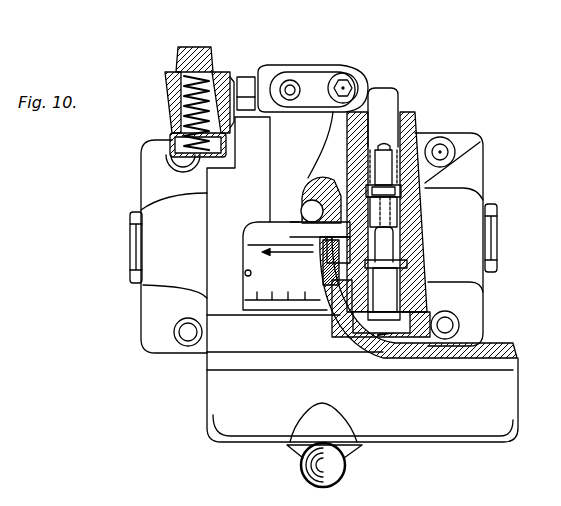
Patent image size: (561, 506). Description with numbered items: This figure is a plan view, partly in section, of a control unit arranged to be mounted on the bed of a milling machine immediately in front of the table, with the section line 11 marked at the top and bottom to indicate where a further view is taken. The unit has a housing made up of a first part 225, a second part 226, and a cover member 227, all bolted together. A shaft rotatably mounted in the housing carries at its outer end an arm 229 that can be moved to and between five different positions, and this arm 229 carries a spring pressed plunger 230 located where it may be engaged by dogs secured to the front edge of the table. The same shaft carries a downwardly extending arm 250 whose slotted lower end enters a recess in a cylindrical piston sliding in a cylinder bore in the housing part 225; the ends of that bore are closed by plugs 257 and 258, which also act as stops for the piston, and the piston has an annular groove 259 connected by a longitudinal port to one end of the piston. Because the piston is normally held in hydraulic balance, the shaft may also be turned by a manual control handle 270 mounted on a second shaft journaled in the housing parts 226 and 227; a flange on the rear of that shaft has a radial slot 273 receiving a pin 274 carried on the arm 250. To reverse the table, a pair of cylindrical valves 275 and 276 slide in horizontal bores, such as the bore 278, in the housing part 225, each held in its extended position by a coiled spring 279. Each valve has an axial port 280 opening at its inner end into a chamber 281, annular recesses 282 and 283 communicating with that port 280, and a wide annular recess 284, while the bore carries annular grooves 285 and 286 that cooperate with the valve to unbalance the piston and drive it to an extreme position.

The section line 11— 11 is at (307, 38).
The first housing part 225 is at (276, 172).
The second housing part 226 is at (258, 331).
The cover member 227 is at (503, 383).
The arm 229 is at (247, 84).
The spring pressed plunger 230 is at (185, 47).
The downwardly extending arm 250 is at (303, 236).
The plug 257 is at (131, 239).
The plug 258 is at (500, 234).
The annular groove 259 is at (367, 164).
The manual control handle 270 is at (345, 466).
The radial slot 273 is at (334, 326).
The pin 274 is at (317, 258).
The cylindrical valve 275 is at (249, 90).
The cylindrical valve 276 is at (394, 103).
The horizontal bore 278 is at (345, 114).
The coiled spring 279 is at (400, 324).
The axial port 280 is at (425, 133).
The chamber 281 is at (386, 360).
The annular recess 282 is at (386, 146).
The annular recess 283 is at (480, 145).
The wide annular recess 284 is at (408, 263).
The annular groove 285 is at (404, 204).
The annular groove 286 is at (406, 228).